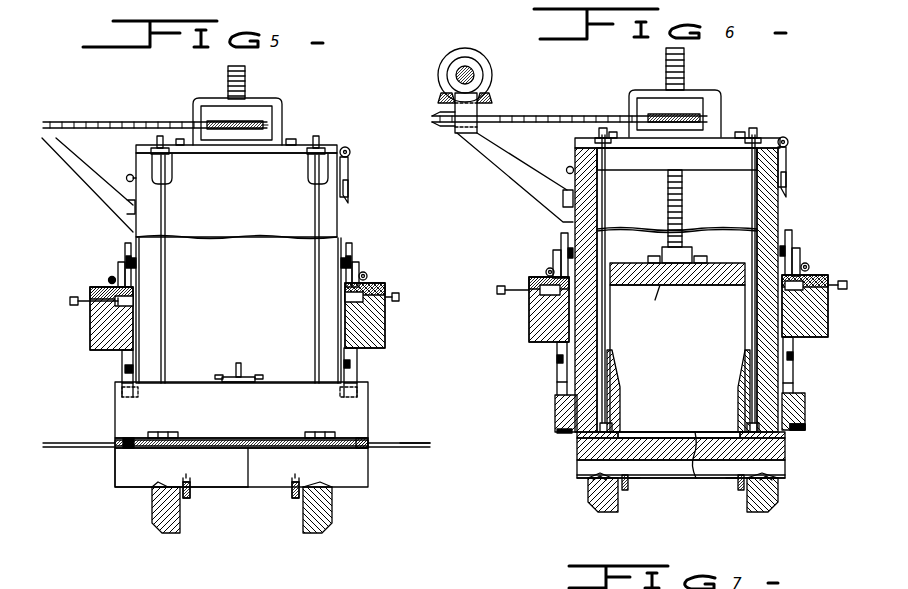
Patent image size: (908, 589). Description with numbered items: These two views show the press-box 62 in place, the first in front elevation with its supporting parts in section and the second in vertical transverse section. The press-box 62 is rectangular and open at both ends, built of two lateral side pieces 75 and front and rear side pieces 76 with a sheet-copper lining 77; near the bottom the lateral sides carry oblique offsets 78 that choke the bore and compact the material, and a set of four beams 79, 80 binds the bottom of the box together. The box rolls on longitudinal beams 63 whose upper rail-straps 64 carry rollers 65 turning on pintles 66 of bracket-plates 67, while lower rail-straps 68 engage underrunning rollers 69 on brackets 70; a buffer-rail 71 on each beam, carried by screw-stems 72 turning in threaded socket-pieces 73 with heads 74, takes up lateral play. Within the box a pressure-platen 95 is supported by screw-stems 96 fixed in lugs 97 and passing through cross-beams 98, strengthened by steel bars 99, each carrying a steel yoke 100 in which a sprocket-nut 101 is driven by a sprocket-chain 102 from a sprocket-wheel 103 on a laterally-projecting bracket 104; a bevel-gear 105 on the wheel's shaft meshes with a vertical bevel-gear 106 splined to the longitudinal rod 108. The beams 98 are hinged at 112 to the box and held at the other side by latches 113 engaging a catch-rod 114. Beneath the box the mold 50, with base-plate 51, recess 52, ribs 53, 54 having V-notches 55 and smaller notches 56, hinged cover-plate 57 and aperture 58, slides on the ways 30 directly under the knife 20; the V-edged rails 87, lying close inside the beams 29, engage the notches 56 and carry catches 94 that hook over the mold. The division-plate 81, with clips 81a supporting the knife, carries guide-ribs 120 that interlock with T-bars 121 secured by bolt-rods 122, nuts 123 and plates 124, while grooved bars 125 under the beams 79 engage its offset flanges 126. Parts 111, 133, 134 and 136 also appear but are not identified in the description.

In FIG. 5, the knife 20 is at (406, 450).
In FIG. 5, the beams 29 is at (158, 525).
In FIG. 6, the beams 29 is at (603, 512).
In FIG. 5, the horizontal ways 30 is at (163, 484).
In FIG. 6, the horizontal ways 30 is at (595, 478).
In FIG. 5, the mold 50 is at (118, 489).
In FIG. 6, the mold 50 is at (786, 470).
In FIG. 6, the base-plate 51 is at (786, 450).
In FIG. 6, the rectangular recess 52 is at (696, 480).
In FIG. 6, the rear rib 53 is at (577, 470).
In FIG. 5, the front rib 54 is at (117, 470).
In FIG. 5, the V-shaped notches 55 is at (185, 480).
In FIG. 6, the V-shaped notches 55 is at (595, 482).
In FIG. 5, the smaller V-shaped notches 56 is at (192, 488).
In FIG. 6, the smaller V-shaped notches 56 is at (635, 480).
In FIG. 5, the cover-plate 57 is at (248, 488).
In FIG. 6, the cover-plate 57 is at (786, 438).
In FIG. 6, the central rectangular aperture 58 is at (707, 432).
In FIG. 5, the press-box 62 is at (238, 310).
In FIG. 6, the press-box 62 is at (677, 358).
In FIG. 5, the longitudinal beams 63 is at (92, 350).
In FIG. 6, the longitudinal beams 63 is at (530, 342).
In FIG. 5, the rail-straps 64 is at (88, 291).
In FIG. 6, the rail-straps 64 is at (528, 282).
In FIG. 5, the rollers 65 is at (125, 250).
In FIG. 6, the rollers 65 is at (561, 245).
In FIG. 5, the pintles 66 is at (119, 266).
In FIG. 6, the pintles 66 is at (555, 262).
In FIG. 5, the bracket-plates 67 is at (134, 262).
In FIG. 6, the bracket-plates 67 is at (598, 250).
In FIG. 5, the lower rail-straps 68 is at (122, 356).
In FIG. 6, the lower rail-straps 68 is at (558, 350).
In FIG. 5, the underrunning rollers 69 is at (122, 402).
In FIG. 6, the underrunning rollers 69 is at (558, 390).
In FIG. 5, the brackets 70 is at (134, 369).
In FIG. 6, the brackets 70 is at (607, 366).
In FIG. 5, the buffer-rail 71 is at (133, 305).
In FIG. 6, the buffer-rail 71 is at (570, 295).
In FIG. 5, the adjustable screw-stems 72 is at (89, 315).
In FIG. 6, the adjustable screw-stems 72 is at (529, 300).
In FIG. 5, the threaded socket-pieces 73 is at (134, 300).
In FIG. 6, the threaded socket-pieces 73 is at (745, 285).
In FIG. 5, the heads 74 is at (72, 305).
In FIG. 6, the heads 74 is at (505, 291).
In FIG. 6, the lateral side pieces 75 is at (598, 213).
In FIG. 5, the front and rear side pieces 76 is at (236, 196).
In FIG. 6, the front and rear side pieces 76 is at (677, 211).
In FIG. 6, the sheet-copper lining 77 is at (757, 207).
In FIG. 6, the oblique offsets 78 is at (620, 405).
In FIG. 6, the bottom beams 79 is at (555, 412).
In FIG. 5, the cross-beams 80 is at (241, 410).
In FIG. 5, the division-plate 81 is at (255, 440).
In FIG. 5, the clips or fingers 81a is at (115, 446).
In FIG. 5, the rails 87 is at (187, 499).
In FIG. 6, the rails 87 is at (626, 492).
In FIG. 5, the catches 94 is at (191, 495).
In FIG. 6, the pressure-platen 95 is at (664, 302).
In FIG. 5, the screw-stems 96 is at (246, 84).
In FIG. 6, the screw-stems 96 is at (685, 68).
In FIG. 6, the lugs 97 is at (690, 256).
In FIG. 6, the cross-beams 98 is at (658, 208).
In FIG. 5, the steel strengthening-bars 99 is at (268, 154).
In FIG. 6, the steel strengthening-bars 99 is at (760, 137).
In FIG. 5, the steel yoke 100 is at (283, 117).
In FIG. 6, the steel yoke 100 is at (722, 115).
In FIG. 5, the sprocket-nut 101 is at (262, 123).
In FIG. 6, the sprocket-nut 101 is at (700, 115).
In FIG. 5, the sprocket-chain 102 is at (118, 122).
In FIG. 6, the sprocket-chain 102 is at (572, 116).
In FIG. 6, the sprocket-wheel 103 is at (456, 130).
In FIG. 5, the laterally-projecting bracket 104 is at (75, 180).
In FIG. 6, the laterally-projecting bracket 104 is at (512, 180).
In FIG. 6, the bevel-gear 105 is at (492, 100).
In FIG. 6, the vertical bevel-gear 106 is at (480, 56).
In FIG. 6, the longitudinal rod 108 is at (456, 76).
In FIG. 6, the rod coupling 111 is at (438, 112).
In FIG. 5, the hinge 112 is at (126, 177).
In FIG. 6, the hinge 112 is at (566, 170).
In FIG. 5, the latches 113 is at (350, 172).
In FIG. 6, the latches 113 is at (787, 160).
In FIG. 5, the catch-rod 114 is at (350, 190).
In FIG. 6, the catch-rod 114 is at (788, 180).
In FIG. 5, the guide-ribs 120 is at (163, 432).
In FIG. 5, the T-bars 121 is at (190, 446).
In FIG. 6, the T-bars 121 is at (806, 428).
In FIG. 5, the bolt-rods 122 is at (166, 222).
In FIG. 6, the bolt-rods 122 is at (605, 160).
In FIG. 5, the nuts 123 is at (320, 142).
In FIG. 6, the nuts 123 is at (762, 138).
In FIG. 6, the plates 124 is at (788, 141).
In FIG. 5, the grooved bars 125 is at (122, 444).
In FIG. 6, the grooved bars 125 is at (556, 431).
In FIG. 5, the offset flanges 126 is at (128, 398).
In FIG. 5, the pin 133 is at (108, 280).
In FIG. 6, the pin 133 is at (546, 272).
In FIG. 5, the center pin 134 is at (238, 362).
In FIG. 5, the stud 136 is at (110, 278).
In FIG. 6, the stud 136 is at (550, 268).